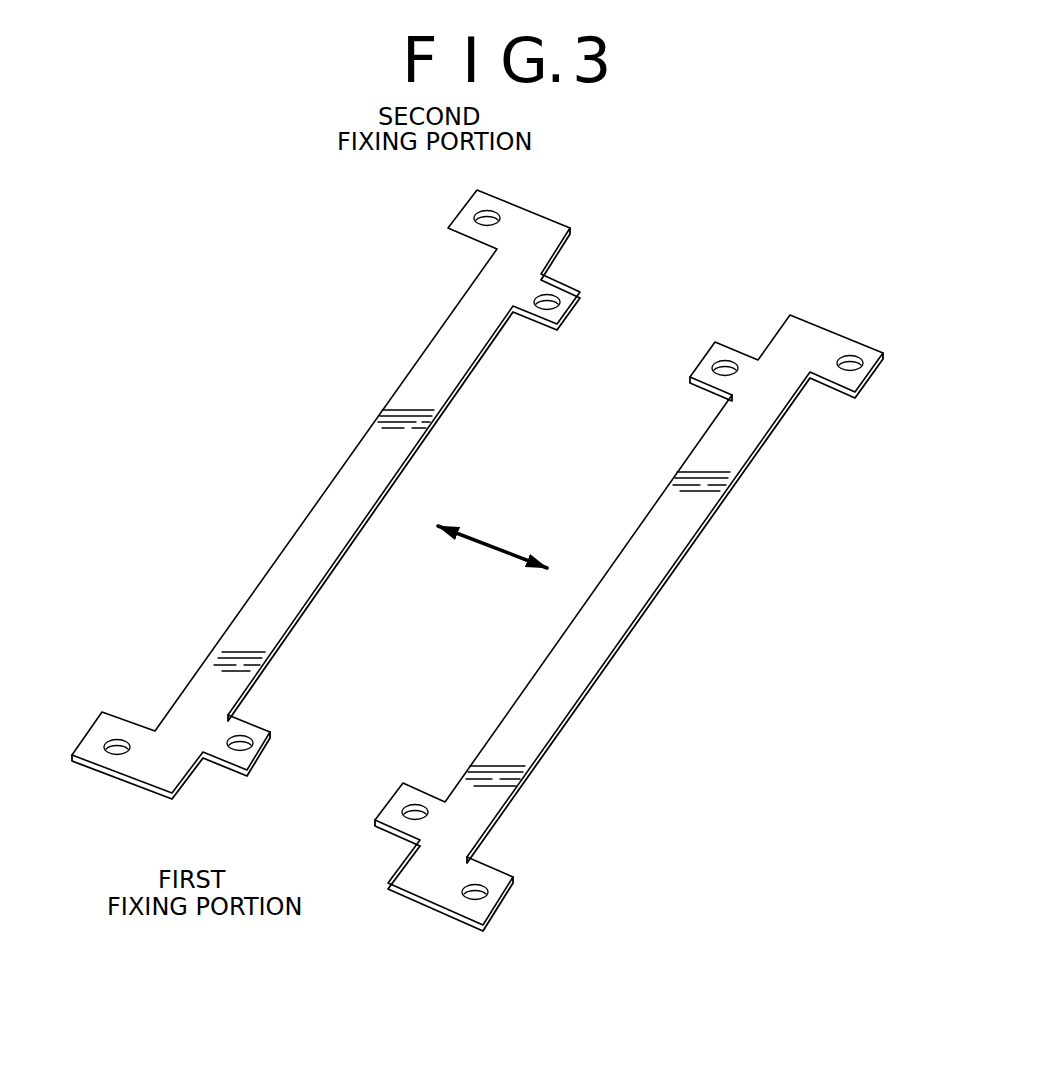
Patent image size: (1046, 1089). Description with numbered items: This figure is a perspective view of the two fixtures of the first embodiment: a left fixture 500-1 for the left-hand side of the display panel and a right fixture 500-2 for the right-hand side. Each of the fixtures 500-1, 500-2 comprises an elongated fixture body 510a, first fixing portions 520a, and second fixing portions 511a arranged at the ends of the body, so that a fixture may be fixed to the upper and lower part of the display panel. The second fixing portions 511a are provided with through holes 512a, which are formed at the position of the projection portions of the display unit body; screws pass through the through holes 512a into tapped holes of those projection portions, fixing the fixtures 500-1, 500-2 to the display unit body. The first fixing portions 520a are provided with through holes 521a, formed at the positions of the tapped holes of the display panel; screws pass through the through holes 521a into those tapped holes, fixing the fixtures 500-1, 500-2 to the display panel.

The left fixture 500-1 is at (572, 193).
The right fixture 500-2 is at (831, 281).
The fixture body 510a is at (355, 434).
The second fixing portion 511a is at (458, 212).
The through hole 512a is at (476, 230).
The first fixing portion 520a is at (224, 786).
The through hole 521a is at (578, 317).